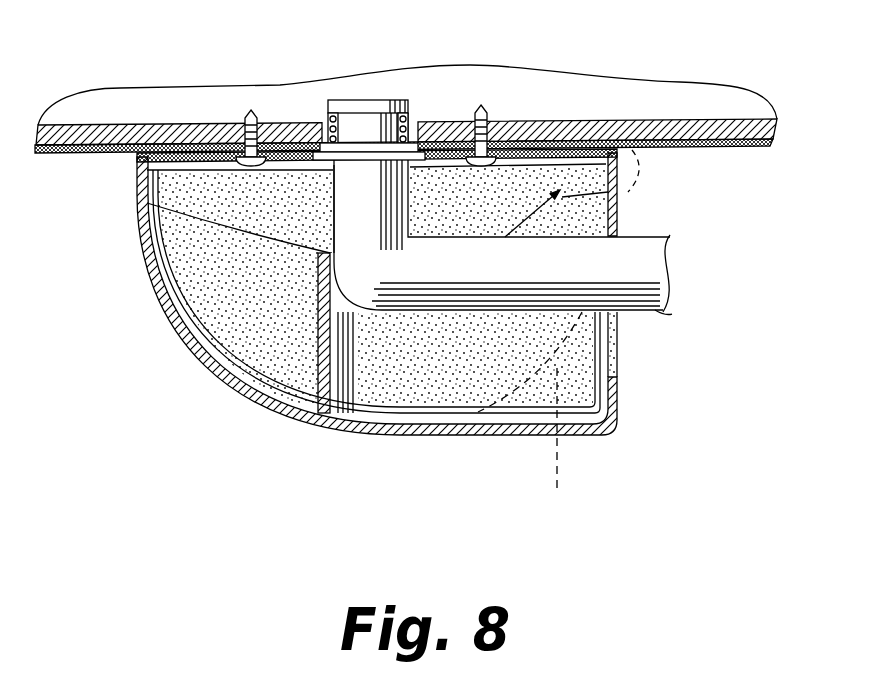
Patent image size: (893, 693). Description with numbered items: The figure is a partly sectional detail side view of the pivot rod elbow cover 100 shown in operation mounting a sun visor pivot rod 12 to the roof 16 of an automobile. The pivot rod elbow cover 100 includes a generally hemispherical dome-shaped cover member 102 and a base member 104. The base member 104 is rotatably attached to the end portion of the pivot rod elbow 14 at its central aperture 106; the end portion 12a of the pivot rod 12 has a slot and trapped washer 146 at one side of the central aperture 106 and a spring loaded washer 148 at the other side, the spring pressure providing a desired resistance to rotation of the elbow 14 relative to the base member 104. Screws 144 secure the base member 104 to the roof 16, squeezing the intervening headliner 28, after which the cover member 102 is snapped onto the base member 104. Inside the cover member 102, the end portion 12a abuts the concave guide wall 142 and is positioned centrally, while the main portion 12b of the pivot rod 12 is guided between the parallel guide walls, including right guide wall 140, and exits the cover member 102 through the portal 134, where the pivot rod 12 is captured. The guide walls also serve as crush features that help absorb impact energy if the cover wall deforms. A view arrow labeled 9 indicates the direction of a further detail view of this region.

The view direction of FIG. 9 is at (642, 180).
The pivot rod 12 is at (455, 313).
The end portion of the pivot rod 12a is at (323, 200).
The main portion of the pivot rod 12b is at (655, 309).
The elbow 14 is at (330, 287).
The roof 16 is at (638, 119).
The headliner 28 is at (737, 147).
The pivot rod elbow cover 100 is at (163, 342).
The cover member 102 is at (300, 437).
The base member 104 is at (637, 232).
The central aperture 106 is at (325, 108).
The portal 134 is at (613, 333).
The right guide wall 140 is at (530, 417).
The concave guide wall 142 is at (377, 424).
The screws 144 is at (244, 112).
The trapped washer 146 is at (412, 162).
The spring loaded washer 148 is at (412, 112).